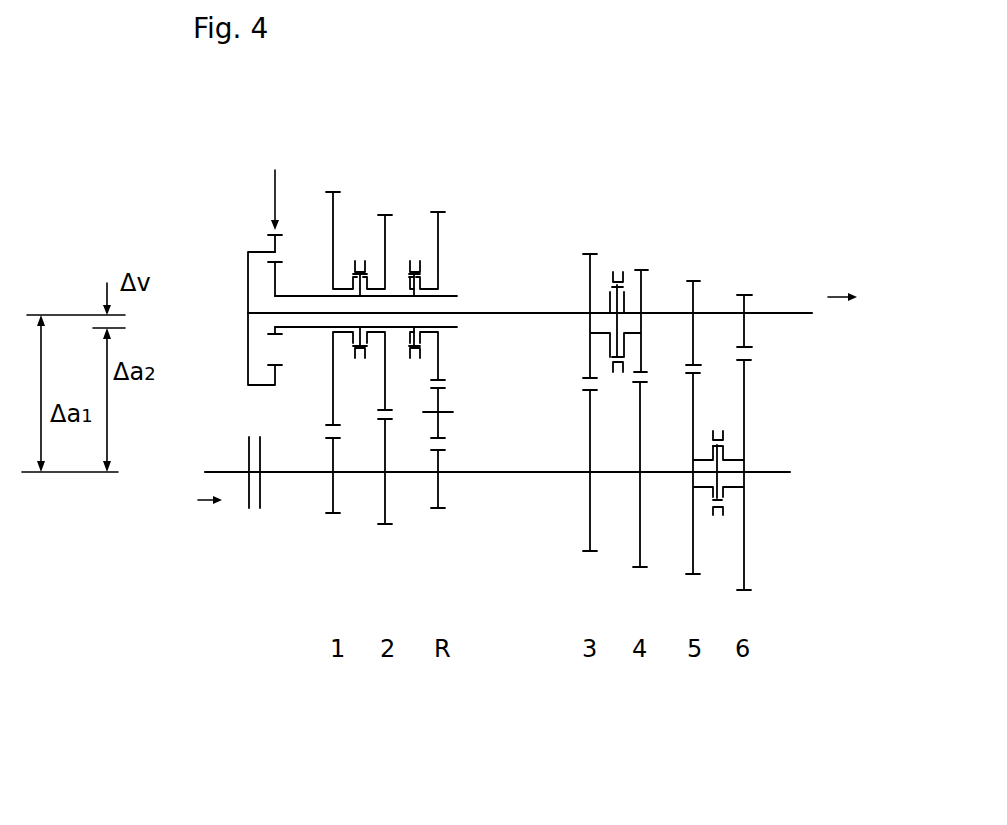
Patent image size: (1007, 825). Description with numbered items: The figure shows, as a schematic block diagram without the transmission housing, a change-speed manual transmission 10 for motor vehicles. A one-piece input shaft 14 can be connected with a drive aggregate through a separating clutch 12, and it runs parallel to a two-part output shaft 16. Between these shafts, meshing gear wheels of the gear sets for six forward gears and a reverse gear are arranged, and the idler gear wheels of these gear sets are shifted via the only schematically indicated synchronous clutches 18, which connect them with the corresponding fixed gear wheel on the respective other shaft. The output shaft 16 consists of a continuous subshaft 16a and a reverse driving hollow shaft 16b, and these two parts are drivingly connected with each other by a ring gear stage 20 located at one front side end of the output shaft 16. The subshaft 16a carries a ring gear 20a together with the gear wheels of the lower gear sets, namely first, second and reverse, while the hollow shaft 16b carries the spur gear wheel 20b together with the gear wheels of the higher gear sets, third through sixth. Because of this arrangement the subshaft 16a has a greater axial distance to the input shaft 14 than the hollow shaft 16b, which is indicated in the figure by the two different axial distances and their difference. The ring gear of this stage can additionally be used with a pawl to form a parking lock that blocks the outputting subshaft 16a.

The manual transmission 10 is at (732, 205).
The separating clutch 12 is at (249, 484).
The input shaft 14 is at (547, 475).
The output shaft 16 is at (536, 306).
The subshaft 16a is at (714, 313).
The hollow shaft 16b is at (299, 330).
The synchronous clutches 18 is at (357, 256).
The ring gear stage 20 is at (244, 241).
The ring gear 20a is at (249, 387).
The spur gear wheel 20b is at (275, 286).